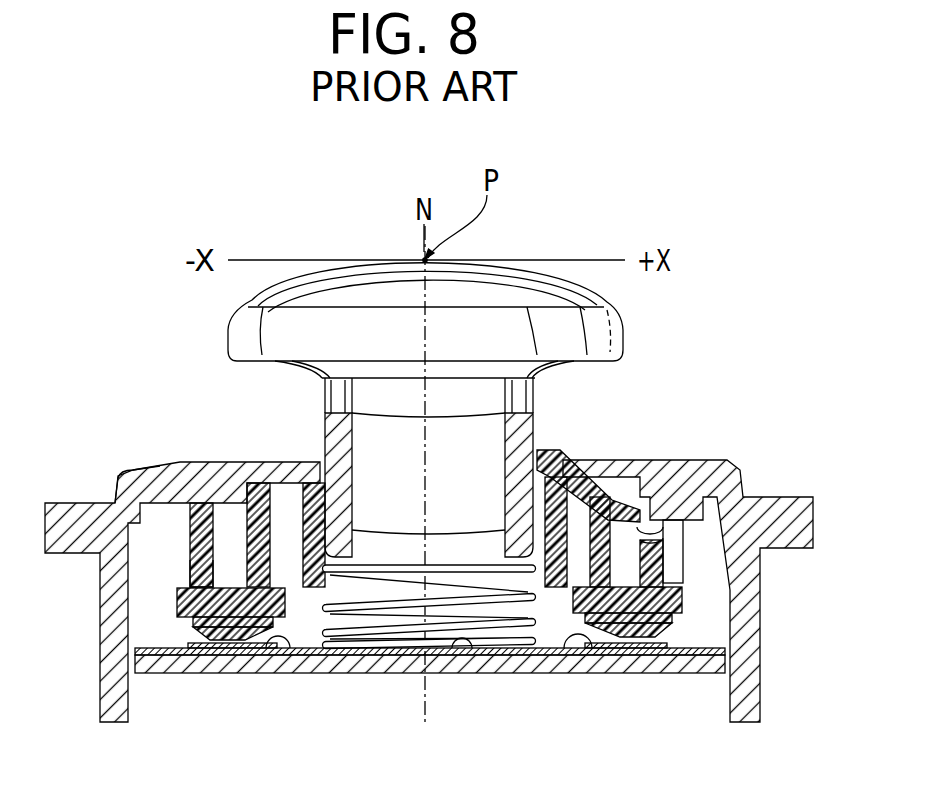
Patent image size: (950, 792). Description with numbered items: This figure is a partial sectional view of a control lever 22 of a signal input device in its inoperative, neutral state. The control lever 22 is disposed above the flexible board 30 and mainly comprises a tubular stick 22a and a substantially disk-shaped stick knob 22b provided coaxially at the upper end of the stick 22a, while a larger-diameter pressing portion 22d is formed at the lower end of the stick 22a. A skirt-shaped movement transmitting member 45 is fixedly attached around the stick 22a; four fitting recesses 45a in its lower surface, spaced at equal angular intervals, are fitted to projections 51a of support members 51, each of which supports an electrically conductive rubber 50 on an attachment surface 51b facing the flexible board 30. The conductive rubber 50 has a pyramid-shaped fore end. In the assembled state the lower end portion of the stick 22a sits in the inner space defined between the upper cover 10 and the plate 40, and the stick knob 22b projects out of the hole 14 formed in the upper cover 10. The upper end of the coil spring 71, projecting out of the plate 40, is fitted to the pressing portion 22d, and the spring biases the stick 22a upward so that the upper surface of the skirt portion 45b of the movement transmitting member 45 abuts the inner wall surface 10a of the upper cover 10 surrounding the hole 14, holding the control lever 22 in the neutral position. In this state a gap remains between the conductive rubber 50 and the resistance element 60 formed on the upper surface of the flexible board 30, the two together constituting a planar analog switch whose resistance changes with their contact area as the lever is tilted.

The upper cover 10 is at (177, 549).
The inner wall surface 10a is at (157, 503).
The hole 14 is at (622, 466).
The control lever 22 is at (477, 358).
The stick 22a is at (518, 400).
The stick knob 22b is at (603, 330).
The pressing portion 22d is at (298, 497).
The flexible board 30 is at (463, 650).
The plate 40 is at (537, 665).
The movement transmitting member 45 is at (426, 494).
The fitting recesses 45a is at (642, 516).
The skirt portion 45b is at (188, 540).
The electrically conductive rubber 50 is at (243, 645).
The support member 51 is at (445, 624).
The projection 51a is at (645, 575).
The attachment surface 51b is at (220, 628).
The resistance element 60 is at (277, 636).
The coil spring 71 is at (349, 614).